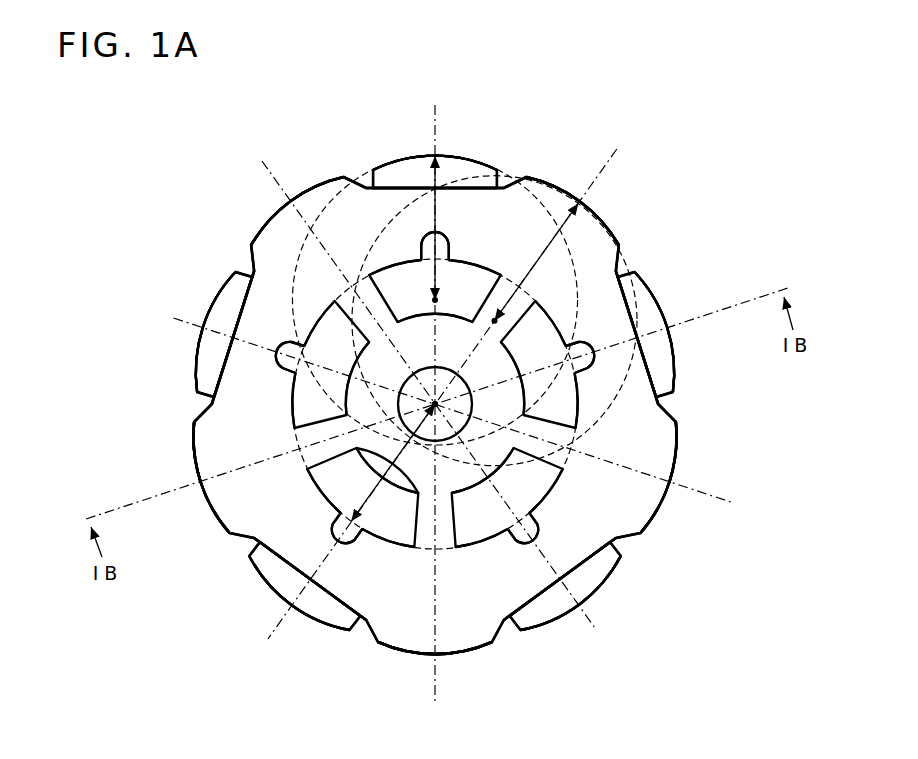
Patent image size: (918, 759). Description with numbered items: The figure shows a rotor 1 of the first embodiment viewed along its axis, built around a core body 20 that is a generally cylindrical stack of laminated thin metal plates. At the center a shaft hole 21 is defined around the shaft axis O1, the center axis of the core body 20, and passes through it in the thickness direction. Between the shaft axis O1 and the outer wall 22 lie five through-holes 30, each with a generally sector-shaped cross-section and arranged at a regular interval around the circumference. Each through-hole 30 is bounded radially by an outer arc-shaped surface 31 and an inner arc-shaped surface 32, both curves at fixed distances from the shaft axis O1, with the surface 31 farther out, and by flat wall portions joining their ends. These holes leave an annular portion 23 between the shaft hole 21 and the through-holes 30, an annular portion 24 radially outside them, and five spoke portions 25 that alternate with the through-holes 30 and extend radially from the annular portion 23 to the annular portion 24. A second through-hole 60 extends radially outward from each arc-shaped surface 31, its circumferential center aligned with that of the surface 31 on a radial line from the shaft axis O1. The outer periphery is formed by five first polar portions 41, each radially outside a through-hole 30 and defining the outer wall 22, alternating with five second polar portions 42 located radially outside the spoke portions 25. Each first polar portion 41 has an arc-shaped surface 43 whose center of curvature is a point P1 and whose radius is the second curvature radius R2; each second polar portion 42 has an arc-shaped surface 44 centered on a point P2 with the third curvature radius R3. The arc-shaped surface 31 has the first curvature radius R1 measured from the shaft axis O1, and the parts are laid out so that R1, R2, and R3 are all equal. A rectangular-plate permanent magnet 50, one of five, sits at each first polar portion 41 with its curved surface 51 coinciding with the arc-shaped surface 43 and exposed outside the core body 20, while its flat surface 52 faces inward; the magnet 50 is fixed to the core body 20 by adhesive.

The rotor 1 is at (563, 112).
The core body 20 is at (386, 636).
The shaft hole 21 is at (439, 368).
The outer wall 22 is at (469, 650).
The annular portion 23 is at (383, 452).
The annular portion 24 is at (270, 513).
The spoke portion 25 is at (356, 283).
The through-hole 30 is at (495, 276).
The arc-shaped surface 31 is at (386, 270).
The arc-shaped surface 32 is at (428, 312).
The first polar portion 41 is at (417, 162).
The second polar portion 42 is at (290, 204).
The arc-shaped surface 43 is at (452, 162).
The arc-shaped surface 44 is at (316, 184).
The magnet 50 is at (387, 166).
The curved surface 51 is at (476, 168).
The flat surface 52 is at (478, 190).
The through-hole 60 is at (422, 240).
The first curvature radius R1 is at (394, 461).
The second curvature radius R2 is at (445, 228).
The third curvature radius R3 is at (536, 261).
The point P1 is at (438, 300).
The point P2 is at (495, 326).
The shaft axis O1 is at (474, 406).